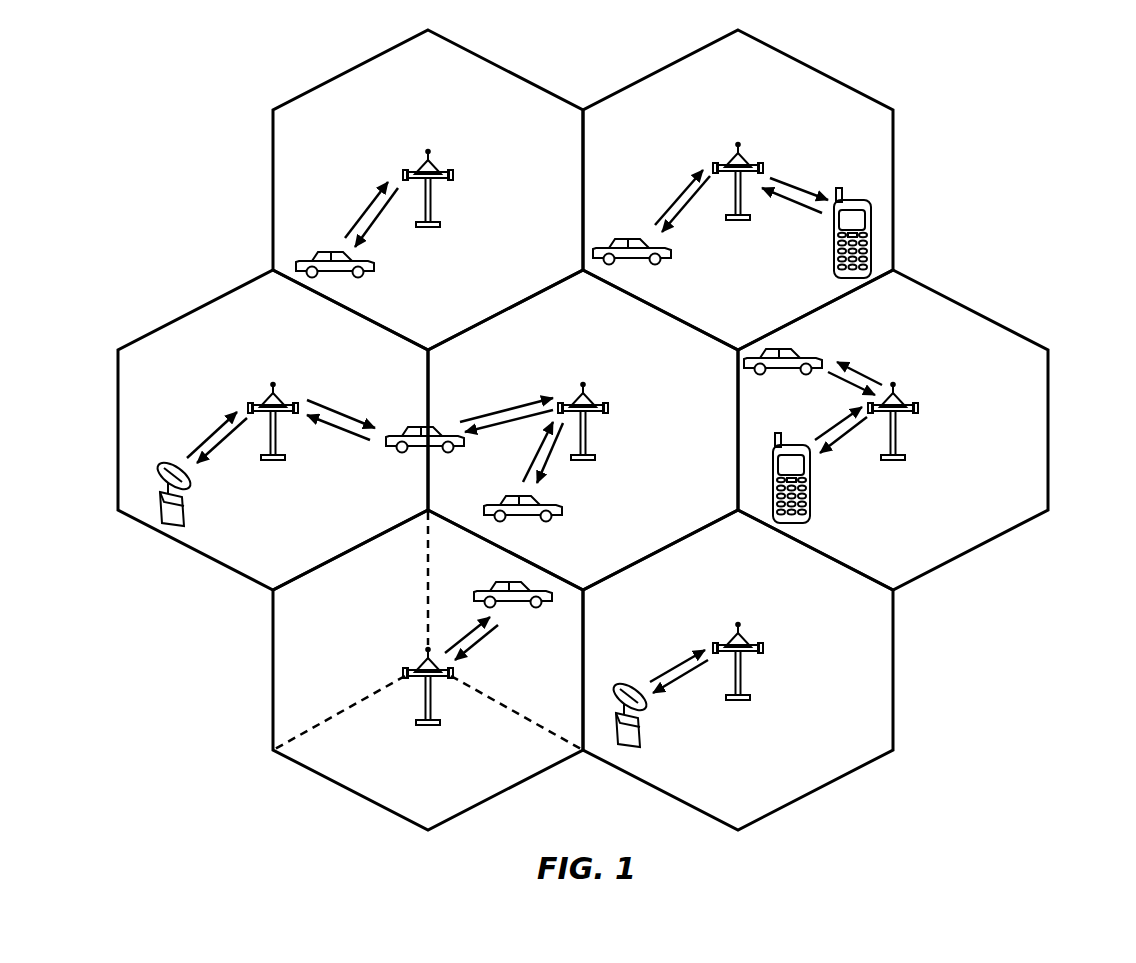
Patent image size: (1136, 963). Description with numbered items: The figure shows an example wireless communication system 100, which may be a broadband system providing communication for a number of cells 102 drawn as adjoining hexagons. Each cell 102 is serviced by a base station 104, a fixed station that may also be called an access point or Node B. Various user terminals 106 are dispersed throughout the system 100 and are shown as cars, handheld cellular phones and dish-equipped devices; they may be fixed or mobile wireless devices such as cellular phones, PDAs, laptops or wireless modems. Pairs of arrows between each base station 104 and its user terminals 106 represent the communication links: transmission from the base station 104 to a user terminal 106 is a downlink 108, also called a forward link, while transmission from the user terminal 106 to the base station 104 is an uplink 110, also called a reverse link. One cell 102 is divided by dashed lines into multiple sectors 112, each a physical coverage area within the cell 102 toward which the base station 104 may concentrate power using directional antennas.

The wireless communication system 100 is at (1073, 82).
The cell 102 is at (360, 64).
The base station 104 is at (428, 148).
The user terminal 106 is at (375, 270).
The downlink 108 is at (372, 229).
The uplink 110 is at (368, 203).
The sector 112 is at (483, 783).